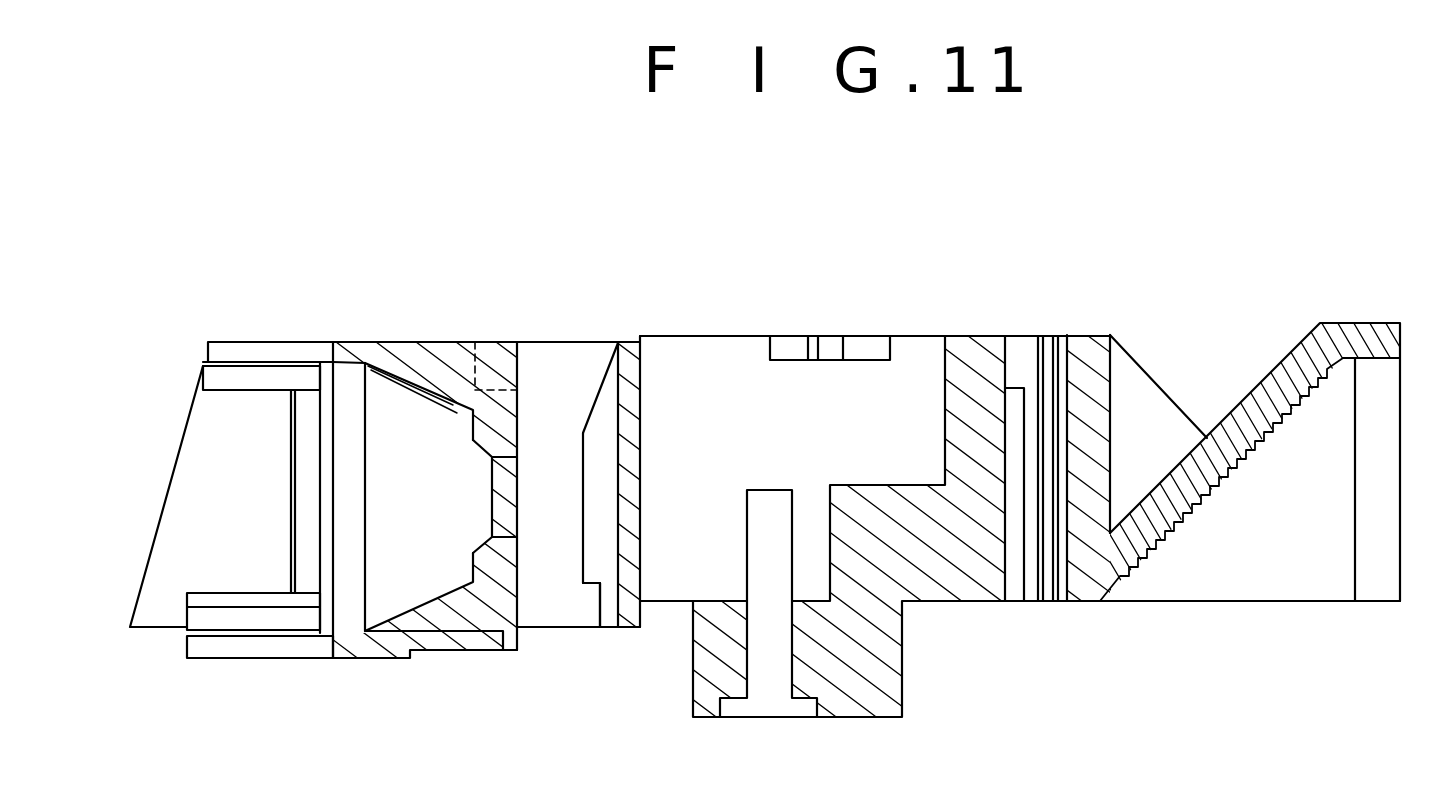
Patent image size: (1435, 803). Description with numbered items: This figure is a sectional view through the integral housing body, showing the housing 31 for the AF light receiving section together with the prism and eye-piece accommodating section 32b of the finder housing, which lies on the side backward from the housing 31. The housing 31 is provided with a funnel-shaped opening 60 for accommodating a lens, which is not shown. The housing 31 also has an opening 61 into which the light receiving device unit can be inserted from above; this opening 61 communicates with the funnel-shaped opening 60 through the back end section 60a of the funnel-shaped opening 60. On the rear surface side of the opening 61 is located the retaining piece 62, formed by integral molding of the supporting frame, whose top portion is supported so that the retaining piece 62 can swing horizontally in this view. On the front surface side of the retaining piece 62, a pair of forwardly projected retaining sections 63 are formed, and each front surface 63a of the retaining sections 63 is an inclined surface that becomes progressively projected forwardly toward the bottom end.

The housing for the AF light receiving section 31 is at (452, 302).
The prism and eye-piece accommodating section 32b is at (1218, 322).
The funnel-shaped opening 60 is at (400, 572).
The back end section of the funnel-shaped opening 60a is at (502, 485).
The opening 61 is at (568, 367).
The retaining piece 62 is at (586, 617).
The retaining section 63 is at (598, 495).
The front surface of the retaining section 63a is at (583, 467).